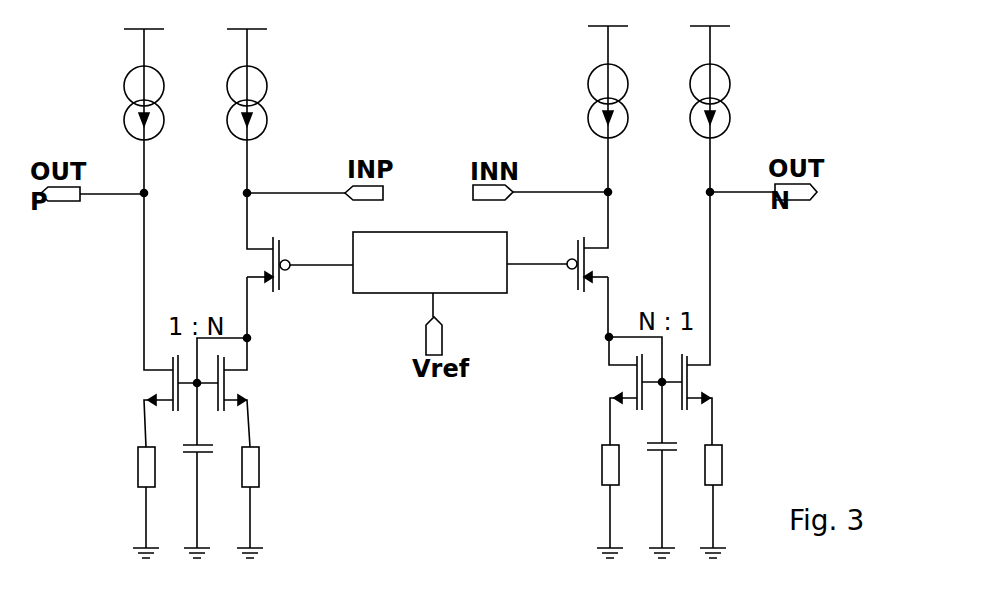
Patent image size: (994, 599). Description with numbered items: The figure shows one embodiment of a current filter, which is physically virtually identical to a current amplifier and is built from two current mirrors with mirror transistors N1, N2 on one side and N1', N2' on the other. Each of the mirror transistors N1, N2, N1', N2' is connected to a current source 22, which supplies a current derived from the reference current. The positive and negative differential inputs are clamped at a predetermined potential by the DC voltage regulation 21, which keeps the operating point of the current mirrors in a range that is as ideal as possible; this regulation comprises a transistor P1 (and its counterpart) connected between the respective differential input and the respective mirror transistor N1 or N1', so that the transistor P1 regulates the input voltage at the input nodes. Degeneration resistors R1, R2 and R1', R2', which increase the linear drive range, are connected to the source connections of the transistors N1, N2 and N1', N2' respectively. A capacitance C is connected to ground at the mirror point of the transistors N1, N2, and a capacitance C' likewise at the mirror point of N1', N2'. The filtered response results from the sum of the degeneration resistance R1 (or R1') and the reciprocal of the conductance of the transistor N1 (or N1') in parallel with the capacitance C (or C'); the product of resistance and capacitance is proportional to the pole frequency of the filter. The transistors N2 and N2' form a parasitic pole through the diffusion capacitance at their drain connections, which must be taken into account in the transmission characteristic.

The current source 22 is at (217, 107).
The DC voltage regulation 21 is at (400, 303).
The transistor P1 is at (427, 262).
The mirror transistor N1 is at (256, 401).
The mirror transistor N2 is at (146, 401).
The degeneration resistor R1 is at (266, 502).
The degeneration resistor R2 is at (133, 502).
The capacitance C is at (201, 501).
The mirror transistor N1' is at (607, 399).
The mirror transistor N2' is at (722, 399).
The degeneration resistor R1' is at (732, 501).
The degeneration resistor R2' is at (596, 501).
The capacitance C' is at (668, 500).